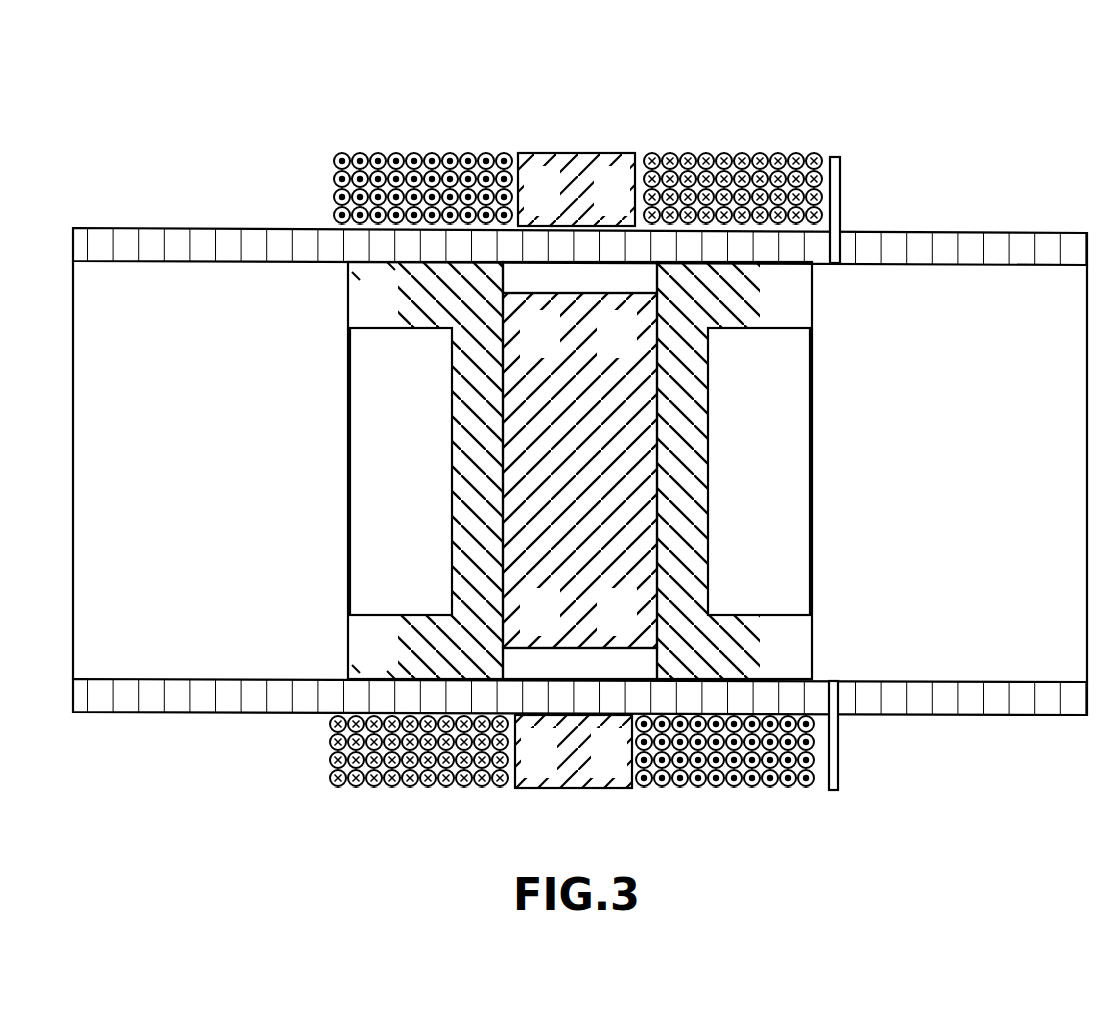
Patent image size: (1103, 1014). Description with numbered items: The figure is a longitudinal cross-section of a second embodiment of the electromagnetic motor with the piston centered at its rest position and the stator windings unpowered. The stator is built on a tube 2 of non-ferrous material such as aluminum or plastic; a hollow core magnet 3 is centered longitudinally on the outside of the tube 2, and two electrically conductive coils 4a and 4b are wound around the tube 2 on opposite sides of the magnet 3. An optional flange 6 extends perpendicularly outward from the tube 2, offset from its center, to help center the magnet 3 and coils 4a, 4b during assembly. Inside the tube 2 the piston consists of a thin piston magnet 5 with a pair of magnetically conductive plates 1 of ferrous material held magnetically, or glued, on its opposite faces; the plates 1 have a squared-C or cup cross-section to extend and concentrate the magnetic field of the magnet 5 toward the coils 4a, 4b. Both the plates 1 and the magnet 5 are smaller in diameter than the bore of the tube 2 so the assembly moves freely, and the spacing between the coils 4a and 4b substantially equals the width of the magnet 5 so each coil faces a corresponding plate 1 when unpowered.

The magnetically conductive plates 1 is at (357, 316).
The tube 2 is at (242, 228).
The hollow core magnet 3 is at (570, 168).
The electrically conductive coil 4a is at (387, 153).
The electrically conductive coil 4b is at (777, 170).
The piston magnet 5 is at (552, 483).
The flange 6 is at (842, 200).